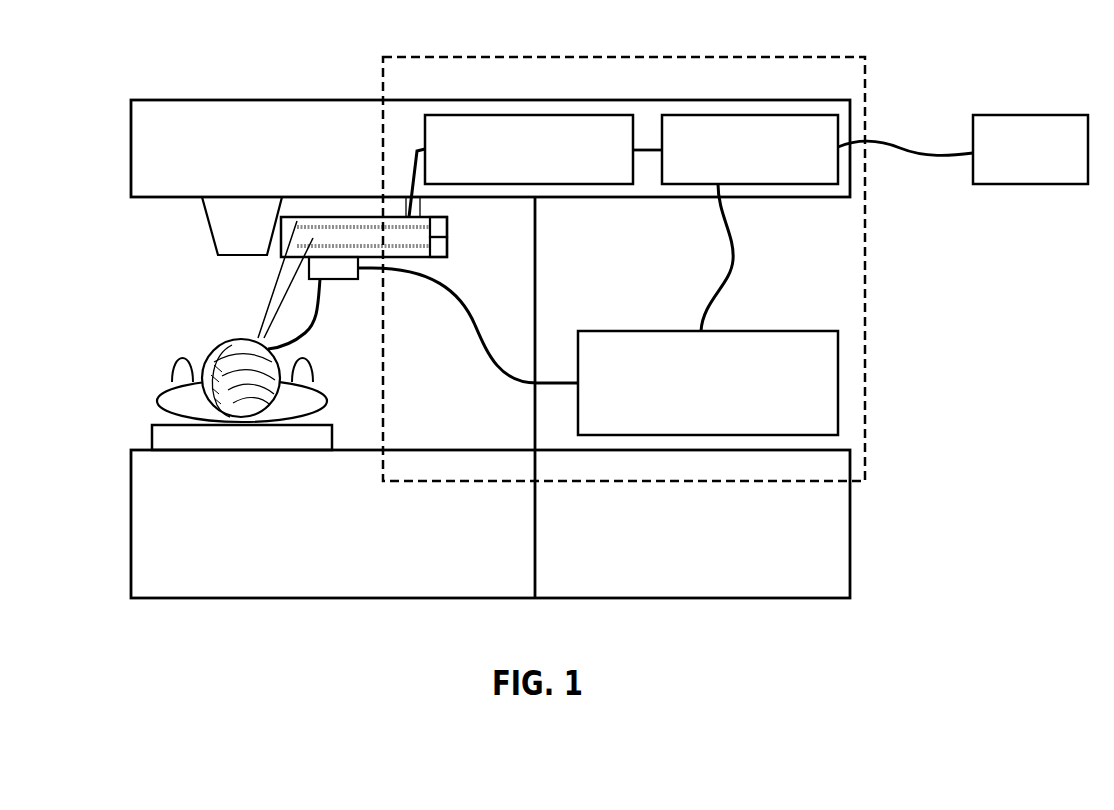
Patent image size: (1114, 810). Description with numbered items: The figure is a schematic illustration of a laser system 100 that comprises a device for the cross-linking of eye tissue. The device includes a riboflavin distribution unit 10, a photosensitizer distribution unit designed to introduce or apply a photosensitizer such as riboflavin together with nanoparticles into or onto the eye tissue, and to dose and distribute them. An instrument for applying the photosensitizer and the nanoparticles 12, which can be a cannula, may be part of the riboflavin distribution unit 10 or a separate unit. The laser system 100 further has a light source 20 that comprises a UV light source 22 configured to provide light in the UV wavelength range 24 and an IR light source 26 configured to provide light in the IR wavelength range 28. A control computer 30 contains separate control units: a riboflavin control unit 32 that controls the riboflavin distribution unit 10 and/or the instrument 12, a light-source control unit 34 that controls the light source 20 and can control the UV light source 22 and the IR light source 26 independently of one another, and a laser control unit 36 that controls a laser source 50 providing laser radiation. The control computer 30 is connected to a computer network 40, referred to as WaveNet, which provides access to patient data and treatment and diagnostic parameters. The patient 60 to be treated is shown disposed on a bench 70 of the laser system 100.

The riboflavin distribution unit 10 is at (330, 280).
The instrument for applying the photosensitizer and the nanoparticles 12 is at (303, 333).
The light source 20 is at (337, 217).
The UV light source 22 is at (449, 223).
The light in the UV wavelength range 24 is at (276, 282).
The IR light source 26 is at (449, 251).
The light in the IR wavelength range 28 is at (273, 292).
The control computer 30 is at (543, 57).
The riboflavin control unit 32 is at (838, 358).
The light-source control unit 34 is at (462, 115).
The laser control unit 36 is at (743, 115).
The computer network 40 is at (1027, 115).
The laser source 50 is at (213, 229).
The patient 60 is at (157, 393).
The bench 70 is at (152, 440).
The laser system 100 is at (817, 525).